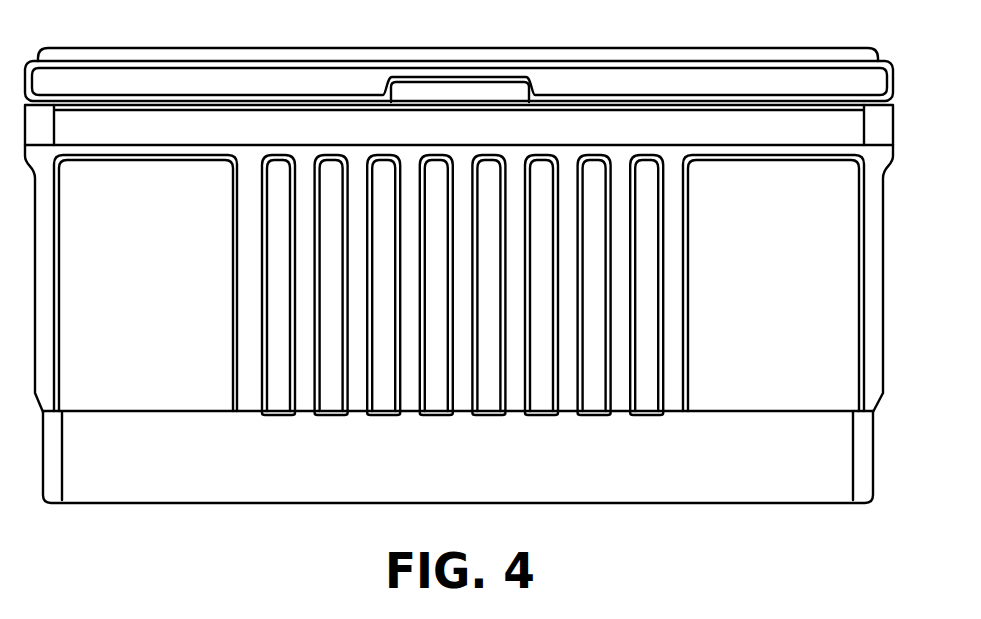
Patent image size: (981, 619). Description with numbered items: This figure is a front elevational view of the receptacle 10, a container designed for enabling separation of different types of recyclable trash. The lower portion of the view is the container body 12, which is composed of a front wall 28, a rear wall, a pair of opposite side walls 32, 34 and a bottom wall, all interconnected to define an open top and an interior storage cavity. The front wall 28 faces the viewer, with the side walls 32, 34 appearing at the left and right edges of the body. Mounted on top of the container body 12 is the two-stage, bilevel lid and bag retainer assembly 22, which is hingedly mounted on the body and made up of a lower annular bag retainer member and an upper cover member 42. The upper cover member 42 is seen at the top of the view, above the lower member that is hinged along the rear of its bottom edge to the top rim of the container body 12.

The receptacle 10 is at (648, 40).
The two-stage, bilevel lid and bag retainer assembly 22 is at (346, 43).
The upper cover member 42 is at (707, 88).
The side wall 32 is at (35, 390).
The side wall 34 is at (873, 443).
The container body 12 is at (738, 508).
The front wall 28 is at (200, 493).